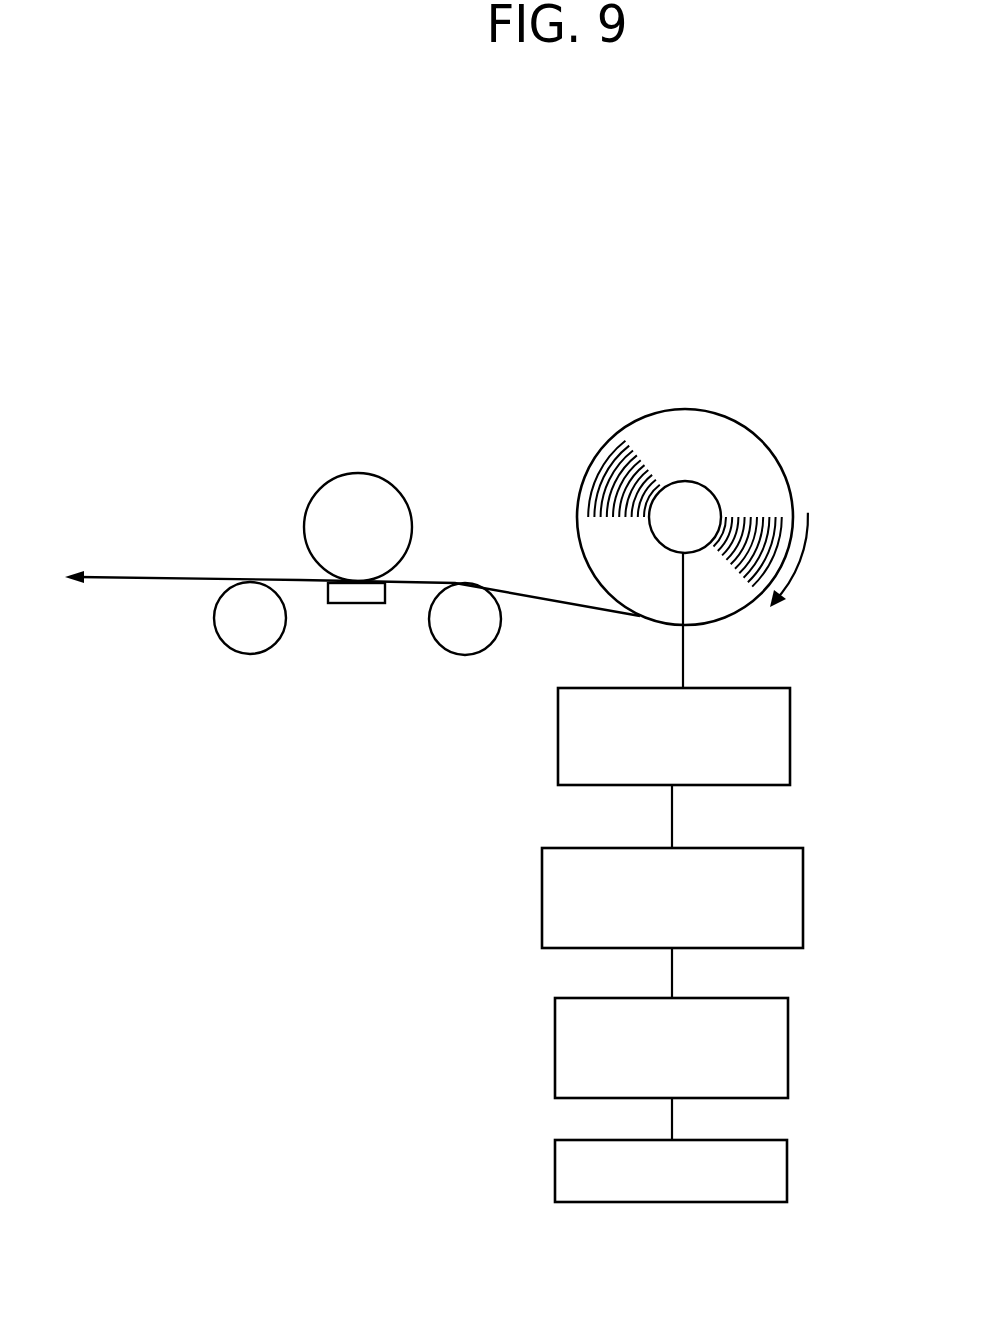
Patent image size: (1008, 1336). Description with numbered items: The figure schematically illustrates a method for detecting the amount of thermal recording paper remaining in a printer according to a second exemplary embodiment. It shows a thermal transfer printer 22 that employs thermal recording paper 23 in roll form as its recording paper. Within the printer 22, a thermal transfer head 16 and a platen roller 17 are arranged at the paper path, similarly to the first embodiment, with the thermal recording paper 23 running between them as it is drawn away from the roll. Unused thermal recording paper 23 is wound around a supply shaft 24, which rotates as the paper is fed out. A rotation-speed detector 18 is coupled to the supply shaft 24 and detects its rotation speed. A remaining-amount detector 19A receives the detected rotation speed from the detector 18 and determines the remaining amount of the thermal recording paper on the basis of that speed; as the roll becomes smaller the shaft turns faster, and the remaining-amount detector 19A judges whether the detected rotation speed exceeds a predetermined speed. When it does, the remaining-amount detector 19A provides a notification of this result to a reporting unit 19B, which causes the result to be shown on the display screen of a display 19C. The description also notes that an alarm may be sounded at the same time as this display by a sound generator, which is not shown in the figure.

The thermal transfer head 16 is at (357, 603).
The platen roller 17 is at (364, 495).
The rotation-speed detector 18 is at (558, 750).
The remaining-amount detector 19A is at (558, 878).
The reporting unit 19B is at (555, 1030).
The display 19C is at (555, 1175).
The thermal transfer printer 22 is at (261, 437).
The thermal recording paper 23 is at (150, 568).
The supply shaft 24 is at (697, 505).